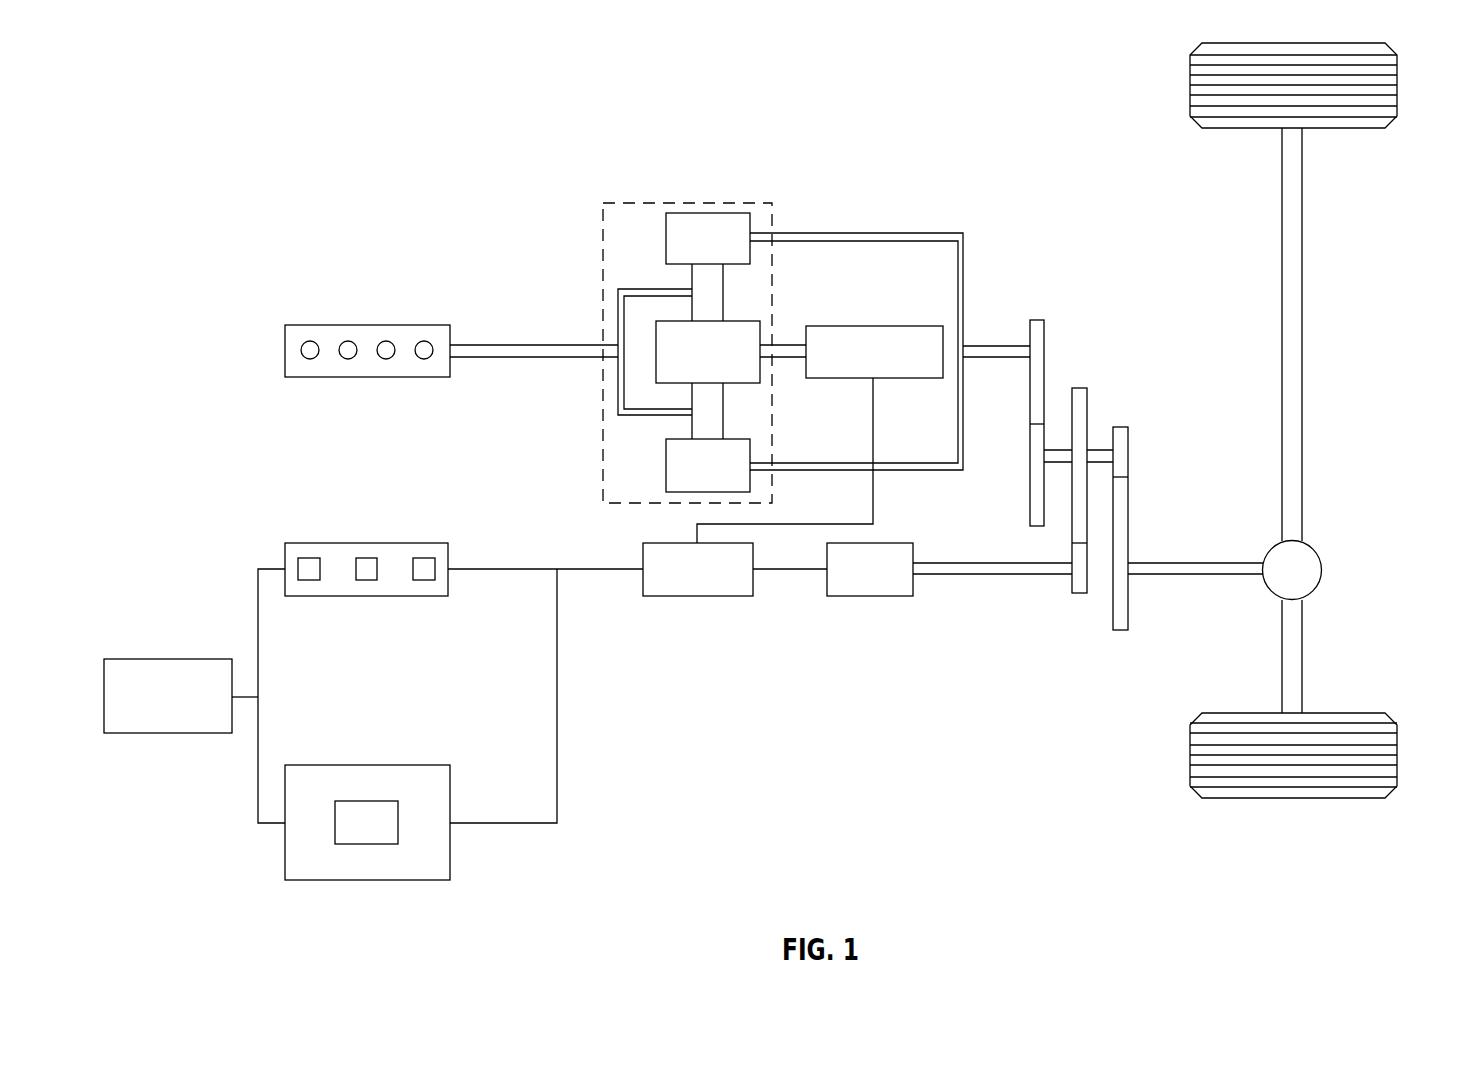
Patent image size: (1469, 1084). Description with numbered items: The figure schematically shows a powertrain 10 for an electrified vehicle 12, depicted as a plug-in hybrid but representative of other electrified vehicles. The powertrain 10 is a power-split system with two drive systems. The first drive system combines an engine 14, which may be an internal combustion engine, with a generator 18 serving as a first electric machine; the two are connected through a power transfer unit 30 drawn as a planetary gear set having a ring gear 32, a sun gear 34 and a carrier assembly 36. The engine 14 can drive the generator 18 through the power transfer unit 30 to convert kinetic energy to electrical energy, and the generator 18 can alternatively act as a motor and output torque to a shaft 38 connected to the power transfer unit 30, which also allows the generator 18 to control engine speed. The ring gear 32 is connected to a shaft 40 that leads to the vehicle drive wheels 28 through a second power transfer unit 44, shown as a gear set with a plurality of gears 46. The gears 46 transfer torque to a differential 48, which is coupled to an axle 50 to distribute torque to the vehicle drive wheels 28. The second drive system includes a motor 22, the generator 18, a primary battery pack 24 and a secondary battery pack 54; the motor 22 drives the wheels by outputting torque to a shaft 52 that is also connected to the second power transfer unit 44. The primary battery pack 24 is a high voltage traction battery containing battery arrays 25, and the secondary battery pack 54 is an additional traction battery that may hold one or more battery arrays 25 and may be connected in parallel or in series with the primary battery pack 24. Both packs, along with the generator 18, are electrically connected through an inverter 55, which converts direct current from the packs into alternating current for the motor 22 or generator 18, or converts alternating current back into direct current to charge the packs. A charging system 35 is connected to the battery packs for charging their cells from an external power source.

The powertrain 10 is at (418, 110).
The electrified vehicle 12 is at (885, 188).
The engine 14 is at (368, 378).
The generator 18 is at (873, 326).
The motor 22 is at (870, 597).
The primary battery pack 24 is at (285, 560).
The battery array 25 is at (310, 575).
The vehicle drive wheels 28 is at (1397, 85).
The power transfer unit 30 is at (663, 198).
The ring gear 32 is at (713, 212).
The sun gear 34 is at (760, 372).
The charging system 35 is at (168, 658).
The carrier assembly 36 is at (618, 383).
The shaft 38 is at (783, 345).
The shaft 40 is at (1005, 358).
The second power transfer unit 44 is at (1148, 282).
The gears 46 is at (1038, 320).
The differential 48 is at (1322, 572).
The axle 50 is at (1302, 367).
The shaft 52 is at (1010, 576).
The secondary battery pack 54 is at (285, 862).
The inverter 55 is at (698, 597).